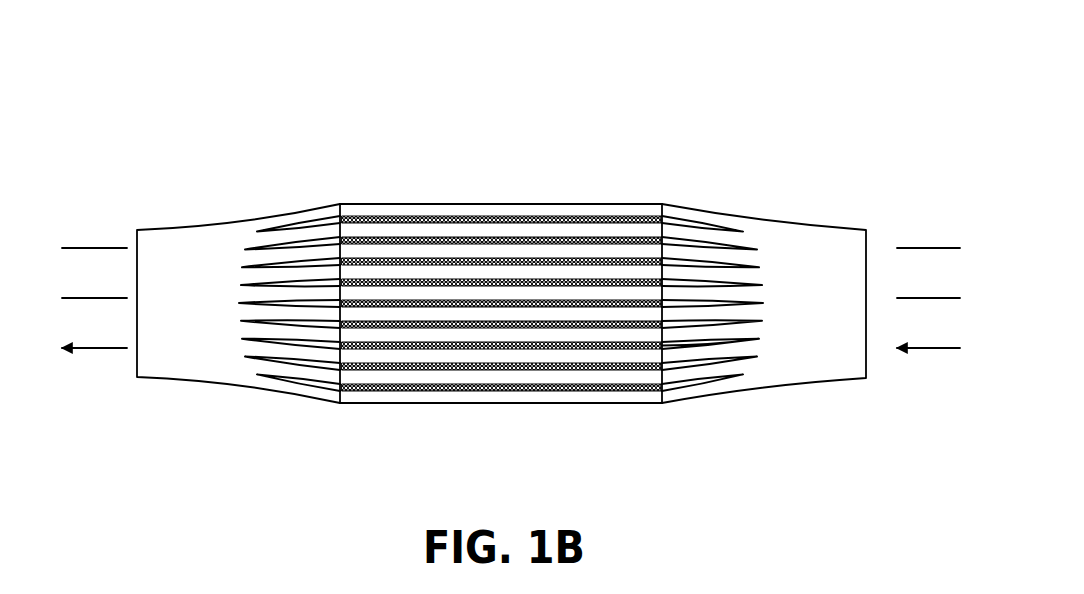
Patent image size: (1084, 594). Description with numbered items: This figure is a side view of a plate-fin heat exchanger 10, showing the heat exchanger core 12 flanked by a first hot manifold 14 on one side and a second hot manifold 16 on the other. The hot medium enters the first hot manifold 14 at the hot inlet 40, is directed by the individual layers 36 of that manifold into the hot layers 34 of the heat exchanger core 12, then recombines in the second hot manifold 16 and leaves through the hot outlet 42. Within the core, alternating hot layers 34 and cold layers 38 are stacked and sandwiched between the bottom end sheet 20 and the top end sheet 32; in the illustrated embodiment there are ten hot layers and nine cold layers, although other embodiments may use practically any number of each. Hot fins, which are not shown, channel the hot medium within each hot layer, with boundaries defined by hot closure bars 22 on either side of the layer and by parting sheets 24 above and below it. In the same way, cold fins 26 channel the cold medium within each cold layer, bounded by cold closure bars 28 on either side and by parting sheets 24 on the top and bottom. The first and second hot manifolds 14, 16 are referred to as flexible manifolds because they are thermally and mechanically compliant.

The heat exchanger 10 is at (687, 82).
The heat exchanger core 12 is at (487, 169).
The first hot manifold 14 is at (778, 180).
The second hot manifold 16 is at (257, 169).
The bottom end sheet 20 is at (503, 404).
The hot closure bars 22 is at (633, 217).
The parting sheets 24 is at (565, 217).
The cold fins 26 is at (520, 216).
The cold closure bars 28 is at (668, 218).
The top end sheet 32 is at (402, 203).
The hot layers 34 is at (640, 335).
The individual layers 36 is at (690, 333).
The cold layers 38 is at (606, 347).
The hot inlet 40 is at (897, 228).
The hot outlet 42 is at (117, 229).